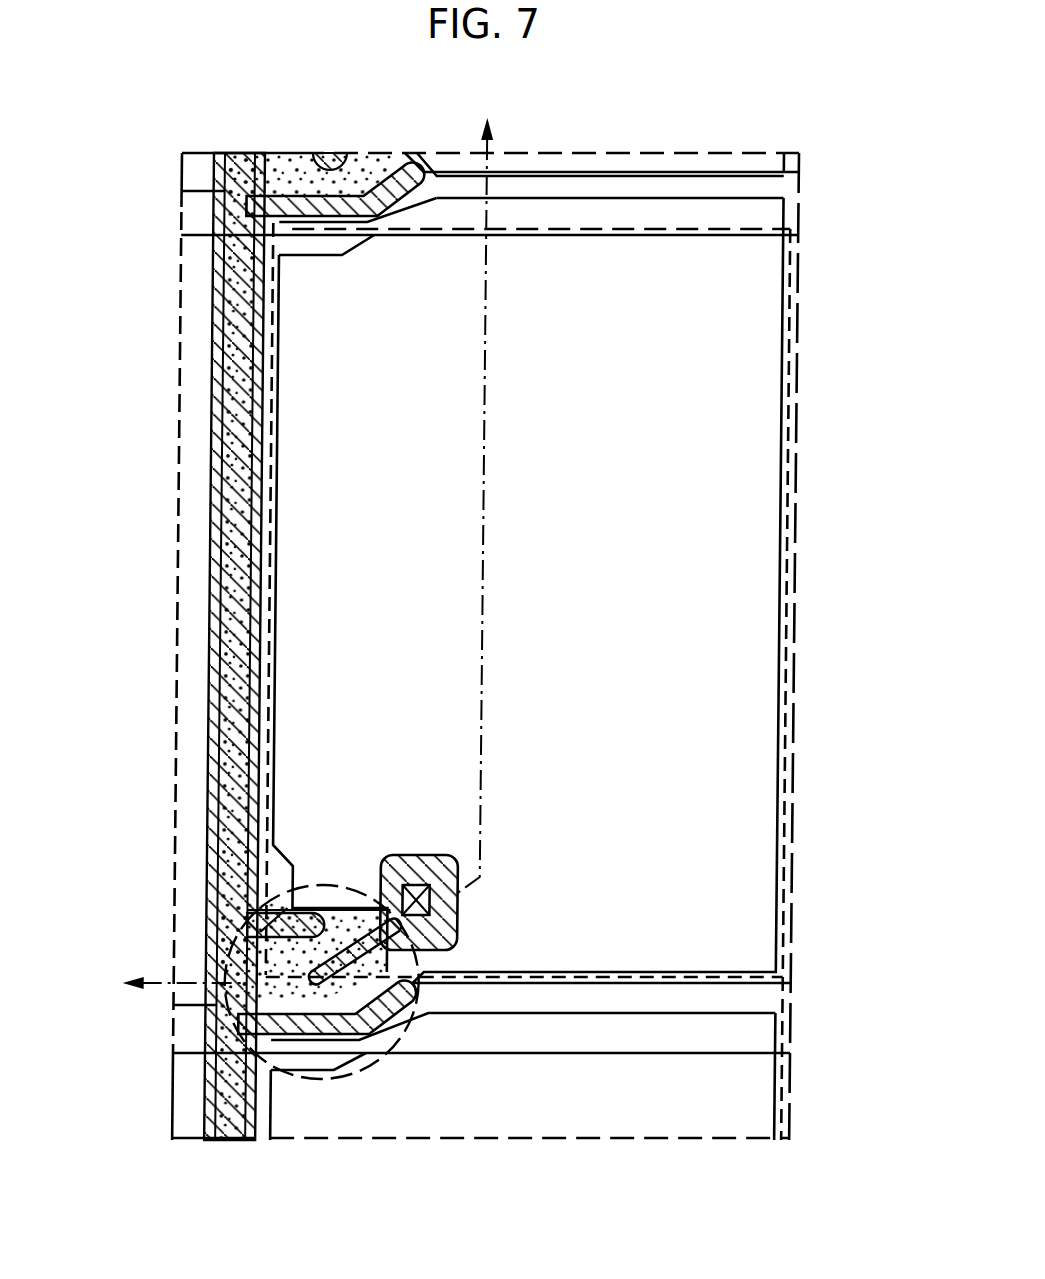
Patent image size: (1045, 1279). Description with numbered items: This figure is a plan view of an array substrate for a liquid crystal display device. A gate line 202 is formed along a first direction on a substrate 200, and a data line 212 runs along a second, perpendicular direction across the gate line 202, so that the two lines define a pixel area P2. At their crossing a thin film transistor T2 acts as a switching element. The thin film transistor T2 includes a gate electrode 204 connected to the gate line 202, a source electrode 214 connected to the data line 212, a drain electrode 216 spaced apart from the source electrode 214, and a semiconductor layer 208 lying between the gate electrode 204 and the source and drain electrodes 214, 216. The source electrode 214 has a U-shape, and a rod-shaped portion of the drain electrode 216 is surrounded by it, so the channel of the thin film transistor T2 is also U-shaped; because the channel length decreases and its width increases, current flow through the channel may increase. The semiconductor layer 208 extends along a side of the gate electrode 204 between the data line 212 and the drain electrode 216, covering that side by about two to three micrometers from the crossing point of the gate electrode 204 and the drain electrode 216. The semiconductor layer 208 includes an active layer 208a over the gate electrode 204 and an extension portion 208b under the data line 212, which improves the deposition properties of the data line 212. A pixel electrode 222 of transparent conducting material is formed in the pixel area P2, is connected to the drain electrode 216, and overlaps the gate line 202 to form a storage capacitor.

The substrate 200 is at (799, 320).
The gate line 202 is at (686, 1055).
The gate electrode 204 is at (249, 908).
The semiconductor layer 208 is at (327, 576).
The active layer 208a is at (288, 900).
The extension portion 208b is at (253, 758).
The data line 212 is at (213, 643).
The source electrode 214 is at (355, 1028).
The drain electrode 216 is at (460, 905).
The pixel electrode 222 is at (784, 397).
The pixel area P2 is at (803, 519).
The thin film transistor T2 is at (303, 1073).